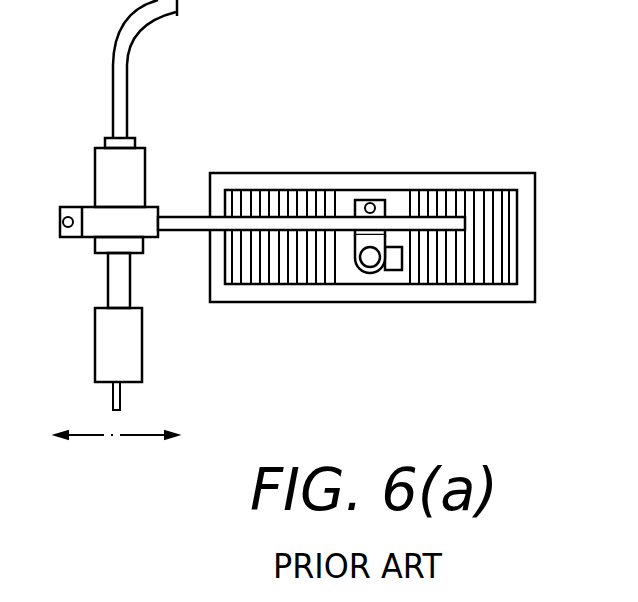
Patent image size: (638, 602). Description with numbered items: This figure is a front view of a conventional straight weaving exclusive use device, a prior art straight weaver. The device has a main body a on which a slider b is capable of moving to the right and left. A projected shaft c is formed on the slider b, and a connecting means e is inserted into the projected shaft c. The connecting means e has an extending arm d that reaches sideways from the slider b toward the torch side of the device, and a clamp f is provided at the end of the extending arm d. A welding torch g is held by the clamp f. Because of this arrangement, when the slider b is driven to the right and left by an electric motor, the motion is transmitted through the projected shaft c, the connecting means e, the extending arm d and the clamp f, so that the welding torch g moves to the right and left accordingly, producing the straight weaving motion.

The main body a is at (302, 183).
The slider b is at (403, 208).
The projected shaft c is at (365, 263).
The extending arm d is at (183, 208).
The connecting means e is at (397, 210).
The clamp f is at (90, 230).
The welding torch g is at (103, 353).